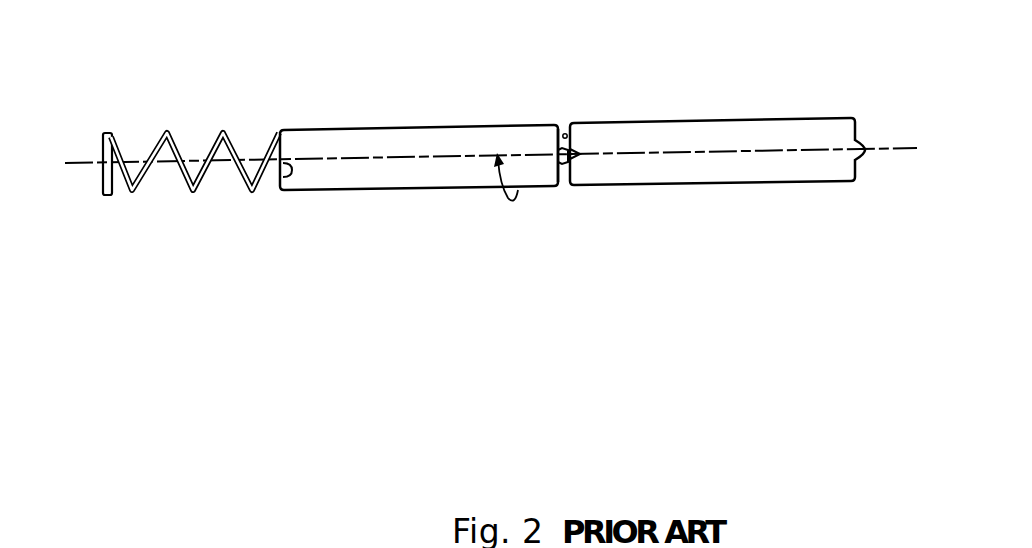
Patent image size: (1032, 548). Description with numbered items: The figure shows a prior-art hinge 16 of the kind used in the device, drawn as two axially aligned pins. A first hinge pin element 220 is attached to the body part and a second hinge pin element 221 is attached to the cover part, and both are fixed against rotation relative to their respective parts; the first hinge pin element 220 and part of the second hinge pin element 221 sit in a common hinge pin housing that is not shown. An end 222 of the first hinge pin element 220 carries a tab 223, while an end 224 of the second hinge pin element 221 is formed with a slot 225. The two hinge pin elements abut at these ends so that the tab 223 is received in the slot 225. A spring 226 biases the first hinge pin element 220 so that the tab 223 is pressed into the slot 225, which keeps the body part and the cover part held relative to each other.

The hinge 16 is at (477, 304).
The first hinge pin element 220 is at (713, 118).
The second hinge pin element 221 is at (398, 127).
The end of the first hinge pin element 222 is at (530, 123).
The tab 223 is at (567, 137).
The end of the second hinge pin element 224 is at (587, 187).
The slot 225 is at (578, 157).
The spring 226 is at (104, 136).